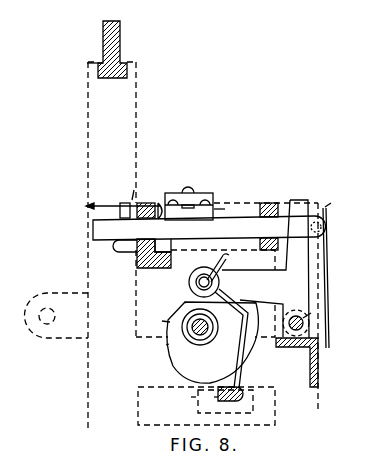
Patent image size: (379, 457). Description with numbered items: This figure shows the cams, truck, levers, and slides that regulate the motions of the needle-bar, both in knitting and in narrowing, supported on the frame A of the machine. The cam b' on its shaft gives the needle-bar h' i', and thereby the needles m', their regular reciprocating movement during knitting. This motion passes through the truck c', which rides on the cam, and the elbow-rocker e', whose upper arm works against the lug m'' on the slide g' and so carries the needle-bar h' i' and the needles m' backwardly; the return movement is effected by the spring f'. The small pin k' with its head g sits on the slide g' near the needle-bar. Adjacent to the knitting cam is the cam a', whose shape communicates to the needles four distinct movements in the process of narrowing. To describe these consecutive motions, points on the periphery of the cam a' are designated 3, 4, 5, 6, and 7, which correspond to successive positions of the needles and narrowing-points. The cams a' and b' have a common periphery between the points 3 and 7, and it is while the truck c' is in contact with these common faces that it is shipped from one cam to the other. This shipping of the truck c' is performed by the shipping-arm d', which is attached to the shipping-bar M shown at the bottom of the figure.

The frame A is at (172, 246).
The needles m' is at (110, 208).
The pin k' is at (122, 202).
The pin head g is at (133, 190).
The needle-bar i' is at (189, 199).
The needle-bar h' is at (225, 211).
The slide g' is at (209, 228).
The lug m'' is at (339, 206).
The spring f' is at (332, 278).
The elbow-rocker e' is at (275, 311).
The point on cam periphery 7 is at (252, 297).
The truck c' is at (201, 275).
The point on cam periphery 3 is at (181, 303).
The narrowing cam a' is at (213, 342).
The knitting cam b' is at (205, 327).
The point on cam periphery 4 is at (161, 320).
The point on cam periphery 5 is at (162, 347).
The shipping-arm d' is at (234, 345).
The point on cam periphery 6 is at (189, 397).
The shipping-bar M is at (209, 399).